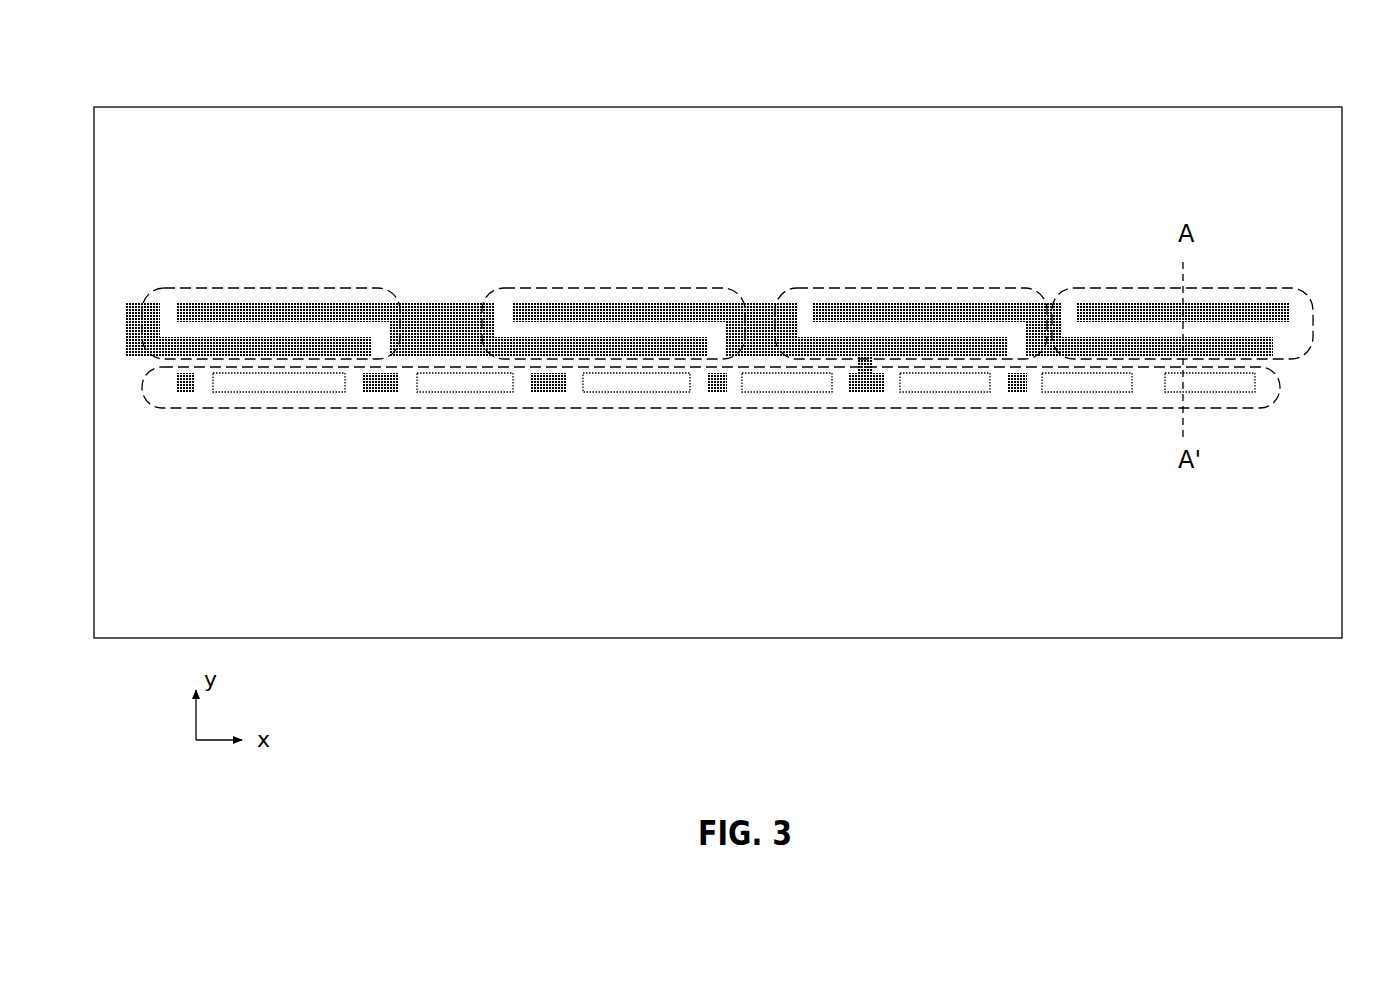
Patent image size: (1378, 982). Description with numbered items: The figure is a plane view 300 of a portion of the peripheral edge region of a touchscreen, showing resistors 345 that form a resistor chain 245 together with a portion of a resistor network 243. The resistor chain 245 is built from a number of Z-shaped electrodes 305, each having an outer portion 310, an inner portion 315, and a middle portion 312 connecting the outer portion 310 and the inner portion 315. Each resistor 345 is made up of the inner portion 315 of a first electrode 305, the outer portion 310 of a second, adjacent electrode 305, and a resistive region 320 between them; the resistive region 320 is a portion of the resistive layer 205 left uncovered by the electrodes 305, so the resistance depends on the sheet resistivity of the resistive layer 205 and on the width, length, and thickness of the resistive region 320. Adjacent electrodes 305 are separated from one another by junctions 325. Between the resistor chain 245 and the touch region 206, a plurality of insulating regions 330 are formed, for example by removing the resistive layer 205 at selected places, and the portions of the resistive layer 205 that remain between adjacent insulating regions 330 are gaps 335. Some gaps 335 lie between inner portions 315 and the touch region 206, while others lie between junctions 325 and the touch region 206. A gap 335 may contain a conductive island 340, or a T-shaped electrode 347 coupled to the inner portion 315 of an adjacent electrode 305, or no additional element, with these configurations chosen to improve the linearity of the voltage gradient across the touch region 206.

The plane view 300 is at (1256, 86).
The resistive layer 205 is at (175, 595).
The touch region 206 is at (770, 545).
The resistor network 243 is at (267, 408).
The resistor chain 245 is at (1043, 173).
The Z-shaped electrode 305 is at (513, 205).
The outer portion 310 is at (300, 305).
The middle portion 312 is at (440, 315).
The inner portion 315 is at (543, 350).
The resistive region 320 is at (583, 332).
The junction 325 is at (715, 347).
The insulating region 330 is at (633, 387).
The gap 335 is at (1148, 385).
The conductive island 340 is at (388, 390).
The resistor 345 is at (690, 288).
The T-shaped electrode 347 is at (862, 392).